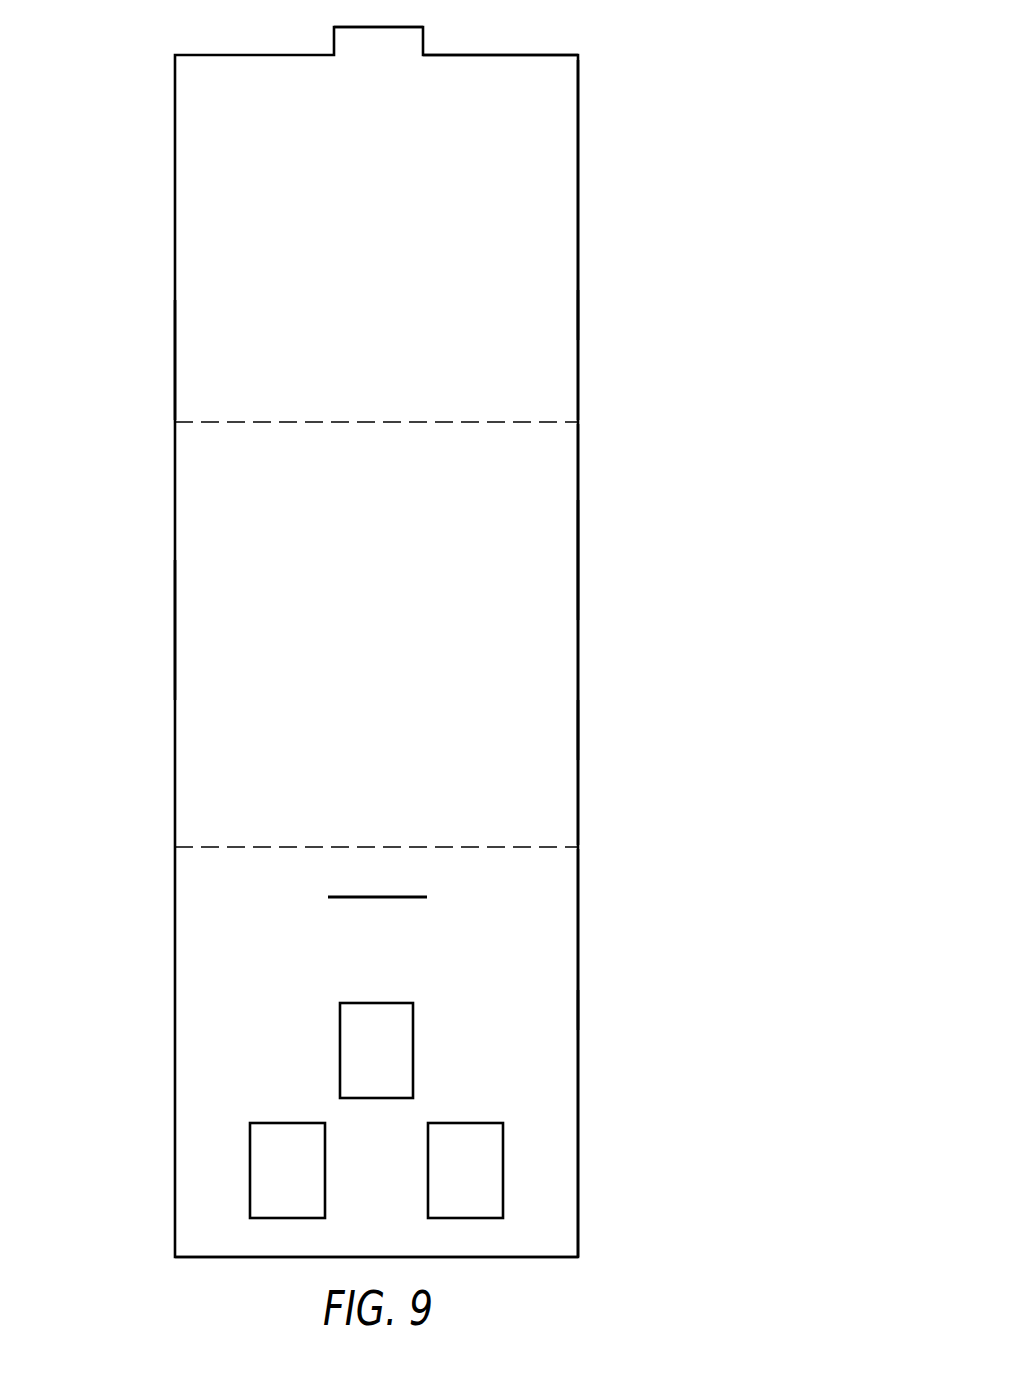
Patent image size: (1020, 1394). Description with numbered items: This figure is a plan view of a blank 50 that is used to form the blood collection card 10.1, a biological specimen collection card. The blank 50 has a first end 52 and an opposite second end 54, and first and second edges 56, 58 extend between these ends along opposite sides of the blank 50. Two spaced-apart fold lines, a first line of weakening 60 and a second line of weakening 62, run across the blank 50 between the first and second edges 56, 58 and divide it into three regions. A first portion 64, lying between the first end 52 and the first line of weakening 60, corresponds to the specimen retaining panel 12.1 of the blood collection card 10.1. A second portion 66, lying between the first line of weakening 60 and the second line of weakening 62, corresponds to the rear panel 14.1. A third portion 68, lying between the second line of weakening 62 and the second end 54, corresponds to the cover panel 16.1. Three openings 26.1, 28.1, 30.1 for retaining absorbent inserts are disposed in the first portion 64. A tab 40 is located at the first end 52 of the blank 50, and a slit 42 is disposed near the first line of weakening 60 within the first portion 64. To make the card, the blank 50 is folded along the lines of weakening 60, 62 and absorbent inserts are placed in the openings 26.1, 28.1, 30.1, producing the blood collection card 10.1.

The blank 50 is at (155, 239).
The blood collection card 10.1 is at (143, 379).
The tab 40 is at (387, 40).
The second end 54 is at (527, 55).
The cover panel 16.1 is at (530, 228).
The third portion 68 is at (527, 323).
The second line of weakening 62 is at (228, 424).
The first edge 56 is at (177, 622).
The second edge 58 is at (580, 558).
The rear panel 14.1 is at (537, 638).
The second portion 66 is at (527, 738).
The first line of weakening 60 is at (227, 845).
The slit 42 is at (367, 896).
The specimen retaining panel 12.1 is at (537, 943).
The first portion 64 is at (527, 1015).
The opening 30.1 is at (365, 1060).
The opening 26.1 is at (275, 1169).
The opening 28.1 is at (476, 1169).
The first end 52 is at (538, 1258).